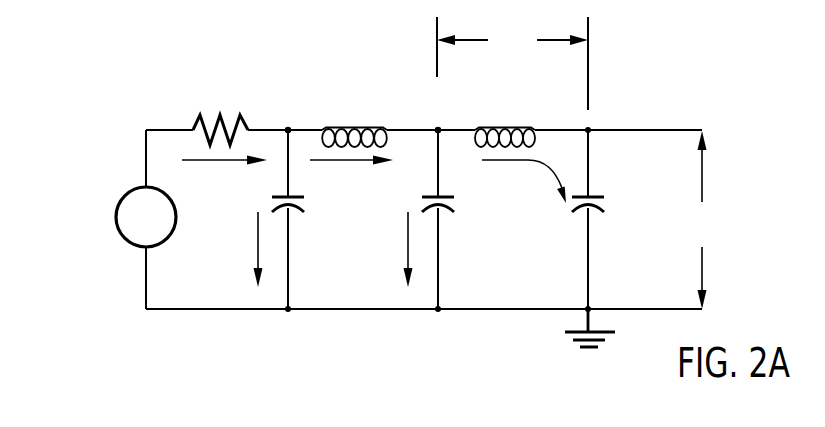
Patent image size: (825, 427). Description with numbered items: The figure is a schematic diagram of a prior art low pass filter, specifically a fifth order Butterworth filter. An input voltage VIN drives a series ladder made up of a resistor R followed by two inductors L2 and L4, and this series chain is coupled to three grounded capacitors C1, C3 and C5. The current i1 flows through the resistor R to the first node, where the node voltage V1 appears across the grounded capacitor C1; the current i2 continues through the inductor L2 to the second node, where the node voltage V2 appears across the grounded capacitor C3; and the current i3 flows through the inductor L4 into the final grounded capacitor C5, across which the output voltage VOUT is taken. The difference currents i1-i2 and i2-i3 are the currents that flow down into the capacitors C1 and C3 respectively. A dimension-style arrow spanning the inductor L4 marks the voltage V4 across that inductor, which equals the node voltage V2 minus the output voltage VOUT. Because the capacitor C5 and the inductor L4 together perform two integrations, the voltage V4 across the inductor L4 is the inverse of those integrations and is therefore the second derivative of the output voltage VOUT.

The input voltage VIN is at (143, 200).
The resistor R is at (220, 115).
The node voltage V1 is at (289, 114).
The inductor L2 is at (354, 117).
The node voltage V2 is at (439, 114).
The inductor L4 is at (505, 119).
The voltage across L4 V4 is at (512, 63).
The capacitor C1 is at (301, 210).
The capacitor C3 is at (451, 210).
The capacitor C5 is at (600, 210).
The current i1 is at (224, 175).
The current i2 is at (351, 175).
The current i3 is at (524, 181).
The capacitor current i1-i2 is at (235, 249).
The capacitor current i2-i3 is at (381, 249).
The output voltage VOUT is at (701, 220).